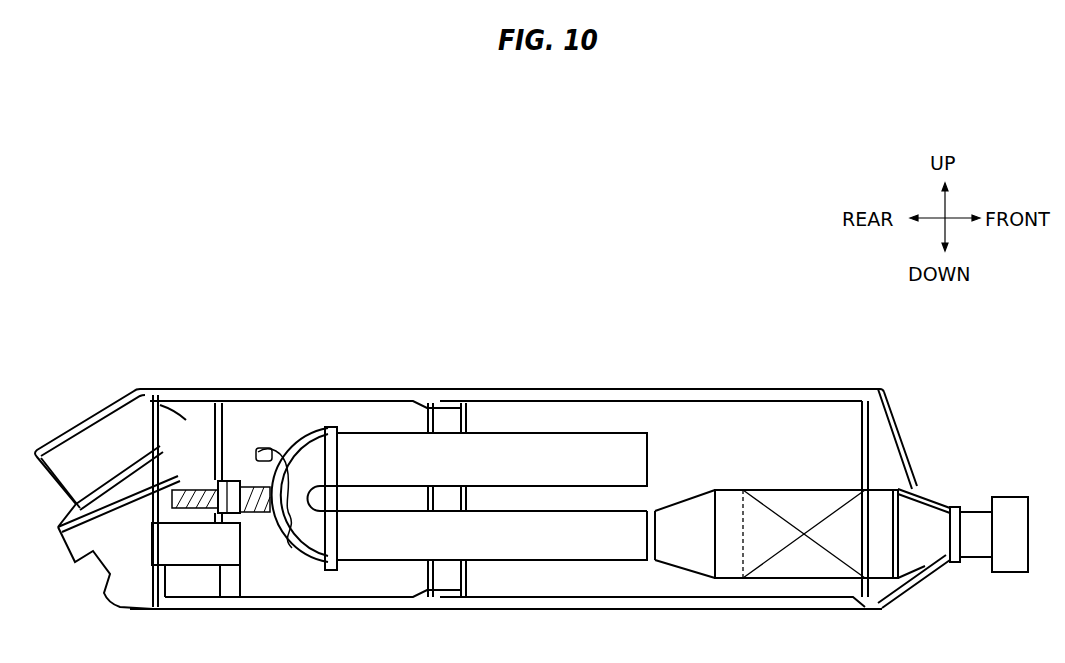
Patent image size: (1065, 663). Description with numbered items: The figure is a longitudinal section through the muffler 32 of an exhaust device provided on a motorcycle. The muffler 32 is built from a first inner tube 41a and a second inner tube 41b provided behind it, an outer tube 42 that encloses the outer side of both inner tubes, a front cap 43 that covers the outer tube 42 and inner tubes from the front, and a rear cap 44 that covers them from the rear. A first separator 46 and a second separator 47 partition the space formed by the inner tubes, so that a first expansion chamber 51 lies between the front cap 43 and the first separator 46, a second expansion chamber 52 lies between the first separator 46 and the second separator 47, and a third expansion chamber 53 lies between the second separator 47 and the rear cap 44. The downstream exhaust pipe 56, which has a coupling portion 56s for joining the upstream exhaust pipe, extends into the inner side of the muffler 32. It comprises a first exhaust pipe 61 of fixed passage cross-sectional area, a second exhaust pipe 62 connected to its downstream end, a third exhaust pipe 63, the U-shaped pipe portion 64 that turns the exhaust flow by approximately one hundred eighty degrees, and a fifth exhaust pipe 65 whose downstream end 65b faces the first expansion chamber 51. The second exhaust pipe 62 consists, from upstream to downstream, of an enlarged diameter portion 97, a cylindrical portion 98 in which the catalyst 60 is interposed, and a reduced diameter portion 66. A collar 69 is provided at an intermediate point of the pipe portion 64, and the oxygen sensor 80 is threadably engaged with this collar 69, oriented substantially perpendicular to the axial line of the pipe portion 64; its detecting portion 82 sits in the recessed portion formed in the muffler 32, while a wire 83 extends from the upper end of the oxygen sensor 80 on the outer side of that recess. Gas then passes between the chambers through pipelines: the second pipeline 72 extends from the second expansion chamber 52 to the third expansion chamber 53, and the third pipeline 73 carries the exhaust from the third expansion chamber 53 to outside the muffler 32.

The muffler 32 is at (613, 387).
The first inner tube 41a is at (720, 392).
The second inner tube 41b is at (330, 392).
The outer tube 42 is at (467, 420).
The front cap 43 is at (893, 415).
The rear cap 44 is at (97, 420).
The first separator 46 is at (484, 392).
The second separator 47 is at (188, 405).
The first expansion chamber 51 is at (755, 445).
The second expansion chamber 52 is at (360, 420).
The third expansion chamber 53 is at (178, 417).
The downstream exhaust pipe 56 is at (972, 553).
The coupling portion 56s is at (1007, 557).
The catalyst 60 is at (740, 575).
The first exhaust pipe 61 is at (987, 553).
The second exhaust pipe 62 is at (720, 577).
The third exhaust pipe 63 is at (538, 547).
The pipe portion 64 is at (315, 548).
The fifth exhaust pipe 65 is at (538, 462).
The downstream end 65b is at (653, 463).
The reduced diameter portion 66 is at (677, 557).
The collar 69 is at (246, 485).
The second pipeline 72 is at (203, 570).
The third pipeline 73 is at (92, 550).
The oxygen sensor 80 is at (230, 478).
The detecting portion 82 is at (268, 442).
The wire 83 is at (185, 545).
The enlarged diameter portion 97 is at (922, 557).
The cylindrical portion 98 is at (827, 570).